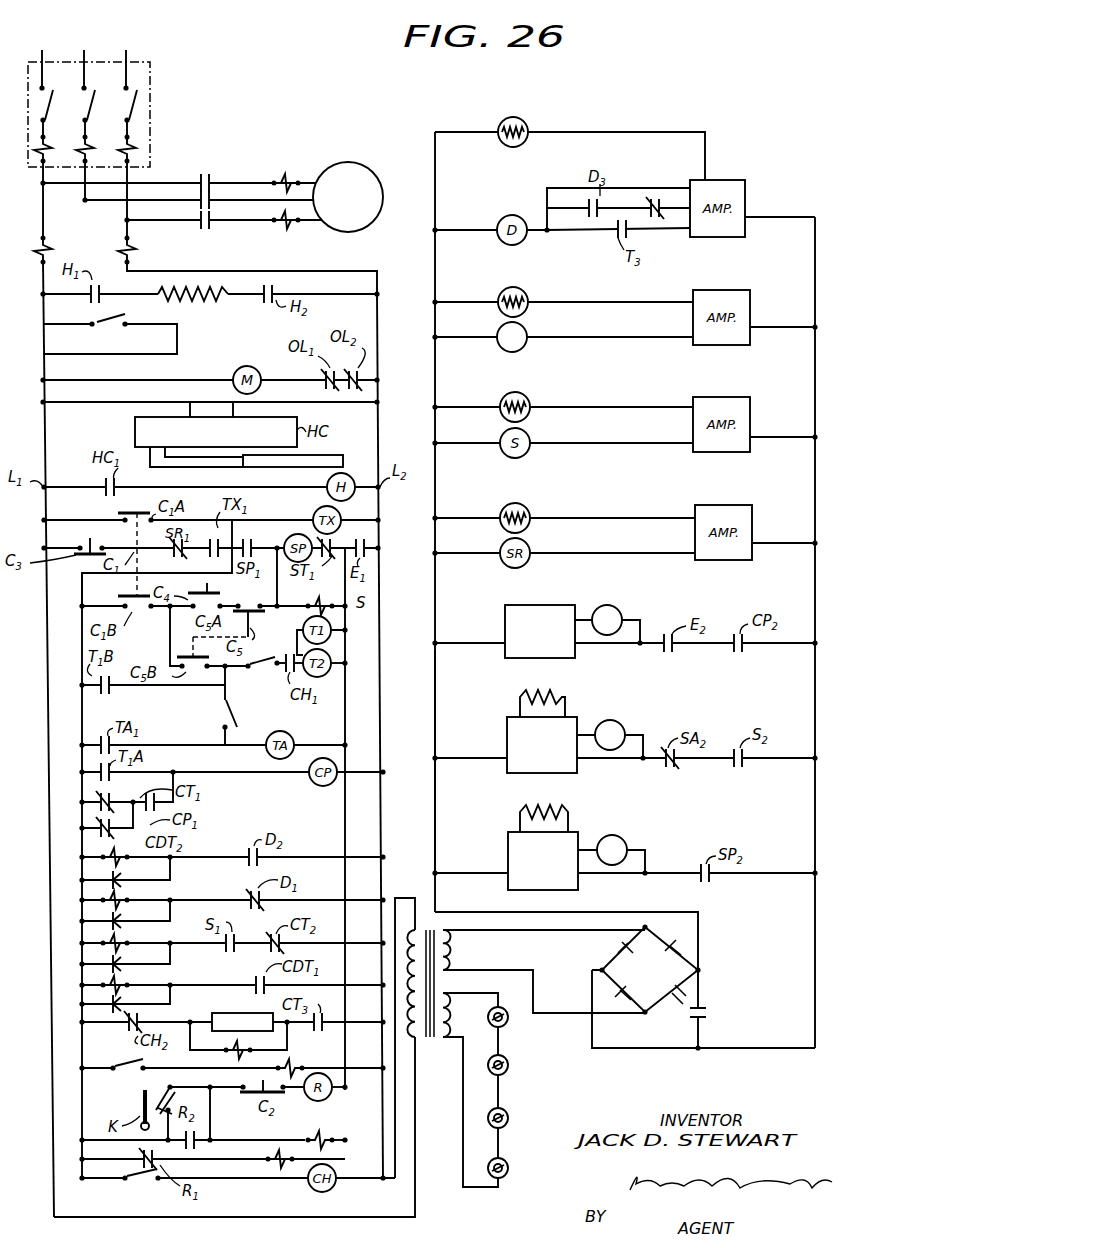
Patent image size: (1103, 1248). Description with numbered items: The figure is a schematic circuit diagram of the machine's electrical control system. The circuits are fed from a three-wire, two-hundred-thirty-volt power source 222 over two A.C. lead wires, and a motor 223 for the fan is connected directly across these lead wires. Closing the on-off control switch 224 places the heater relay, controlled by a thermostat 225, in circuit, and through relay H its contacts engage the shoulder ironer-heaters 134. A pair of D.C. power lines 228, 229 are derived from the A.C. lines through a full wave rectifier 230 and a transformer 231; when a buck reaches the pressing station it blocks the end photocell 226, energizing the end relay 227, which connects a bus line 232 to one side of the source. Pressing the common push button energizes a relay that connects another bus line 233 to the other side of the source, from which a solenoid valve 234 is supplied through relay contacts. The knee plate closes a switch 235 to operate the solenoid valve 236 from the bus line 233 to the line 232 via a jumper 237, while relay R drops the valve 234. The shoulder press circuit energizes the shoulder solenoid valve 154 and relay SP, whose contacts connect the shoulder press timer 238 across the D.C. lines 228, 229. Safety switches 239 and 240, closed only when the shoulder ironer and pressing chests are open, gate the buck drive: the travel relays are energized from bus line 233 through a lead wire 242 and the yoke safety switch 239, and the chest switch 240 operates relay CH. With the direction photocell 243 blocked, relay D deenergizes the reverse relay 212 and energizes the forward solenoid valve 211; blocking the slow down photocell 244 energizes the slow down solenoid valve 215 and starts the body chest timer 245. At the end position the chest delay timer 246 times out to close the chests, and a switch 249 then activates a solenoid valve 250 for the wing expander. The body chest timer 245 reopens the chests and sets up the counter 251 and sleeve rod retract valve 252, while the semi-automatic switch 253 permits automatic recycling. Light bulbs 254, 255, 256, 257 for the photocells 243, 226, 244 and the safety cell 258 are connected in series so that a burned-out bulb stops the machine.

The power source 222 is at (135, 41).
The motor 223 is at (398, 142).
The shoulder ironer-heaters 134 is at (198, 300).
The on-off control switch 224 is at (118, 330).
The thermostat 225 is at (298, 468).
The end photocell 226 is at (527, 296).
The end relay 227 is at (525, 346).
The D.C. power line 228 is at (128, 975).
The D.C. power line 229 is at (437, 806).
The full wave rectifier 230 is at (652, 987).
The transformer 231 is at (432, 1040).
The bus line 232 is at (345, 592).
The bus line 233 is at (82, 620).
The solenoid valve 234 is at (274, 1164).
The switch 235 is at (160, 1090).
The solenoid valve 236 is at (326, 1130).
The jumper 237 is at (212, 1120).
The shoulder press timer 238 is at (575, 832).
The safety switch 239 is at (268, 672).
The safety switch 240 is at (120, 1188).
The lead wire 242 is at (170, 640).
The direction photocell 243 is at (525, 122).
The slow down photocell 244 is at (528, 400).
The body chest timer 245 is at (572, 717).
The chest delay timer 246 is at (540, 605).
The switch 249 is at (130, 1062).
The solenoid valve 250 is at (300, 1062).
The counter 251 is at (246, 1013).
The sleeve rod retract valve 252 is at (250, 1046).
The semi-automatic switch 253 is at (226, 720).
The light bulb 254 is at (496, 1180).
The light bulb 255 is at (506, 1112).
The light bulb 256 is at (508, 1066).
The light bulb 257 is at (506, 1024).
The safety cell 258 is at (528, 510).
The shoulder solenoid valve 154 is at (316, 612).
The forward solenoid valve 211 is at (128, 866).
The reverse relay 212 is at (128, 910).
The slow down solenoid valve 215 is at (128, 932).